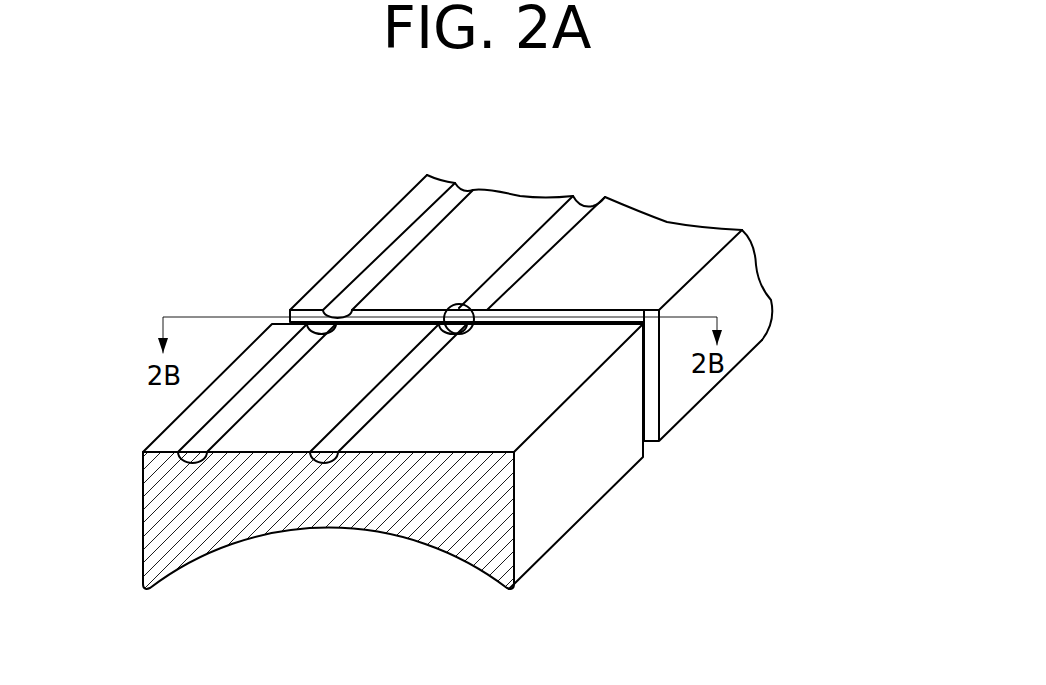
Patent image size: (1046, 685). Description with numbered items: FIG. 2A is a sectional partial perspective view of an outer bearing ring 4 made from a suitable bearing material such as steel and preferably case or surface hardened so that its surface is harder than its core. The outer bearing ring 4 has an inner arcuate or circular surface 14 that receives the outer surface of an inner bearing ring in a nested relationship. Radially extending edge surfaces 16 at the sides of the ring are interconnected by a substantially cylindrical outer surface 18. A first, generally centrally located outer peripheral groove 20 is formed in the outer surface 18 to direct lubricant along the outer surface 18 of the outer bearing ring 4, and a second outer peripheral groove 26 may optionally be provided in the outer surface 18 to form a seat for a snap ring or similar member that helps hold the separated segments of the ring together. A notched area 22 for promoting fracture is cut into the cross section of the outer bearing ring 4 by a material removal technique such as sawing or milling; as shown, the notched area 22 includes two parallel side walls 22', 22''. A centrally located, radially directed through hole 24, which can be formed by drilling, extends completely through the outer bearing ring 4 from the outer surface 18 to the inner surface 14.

The outer bearing ring 4 is at (600, 272).
The inner arcuate surface 14 is at (383, 458).
The radially extending edge surfaces 16 is at (145, 492).
The cylindrical outer surface 18 is at (484, 218).
The first outer peripheral groove 20 is at (580, 210).
The notched area 22 is at (675, 335).
The first side wall of notched area 22' is at (581, 382).
The second side wall of notched area 22'' is at (644, 289).
The through hole 24 is at (457, 307).
The second outer peripheral groove 26 is at (225, 421).